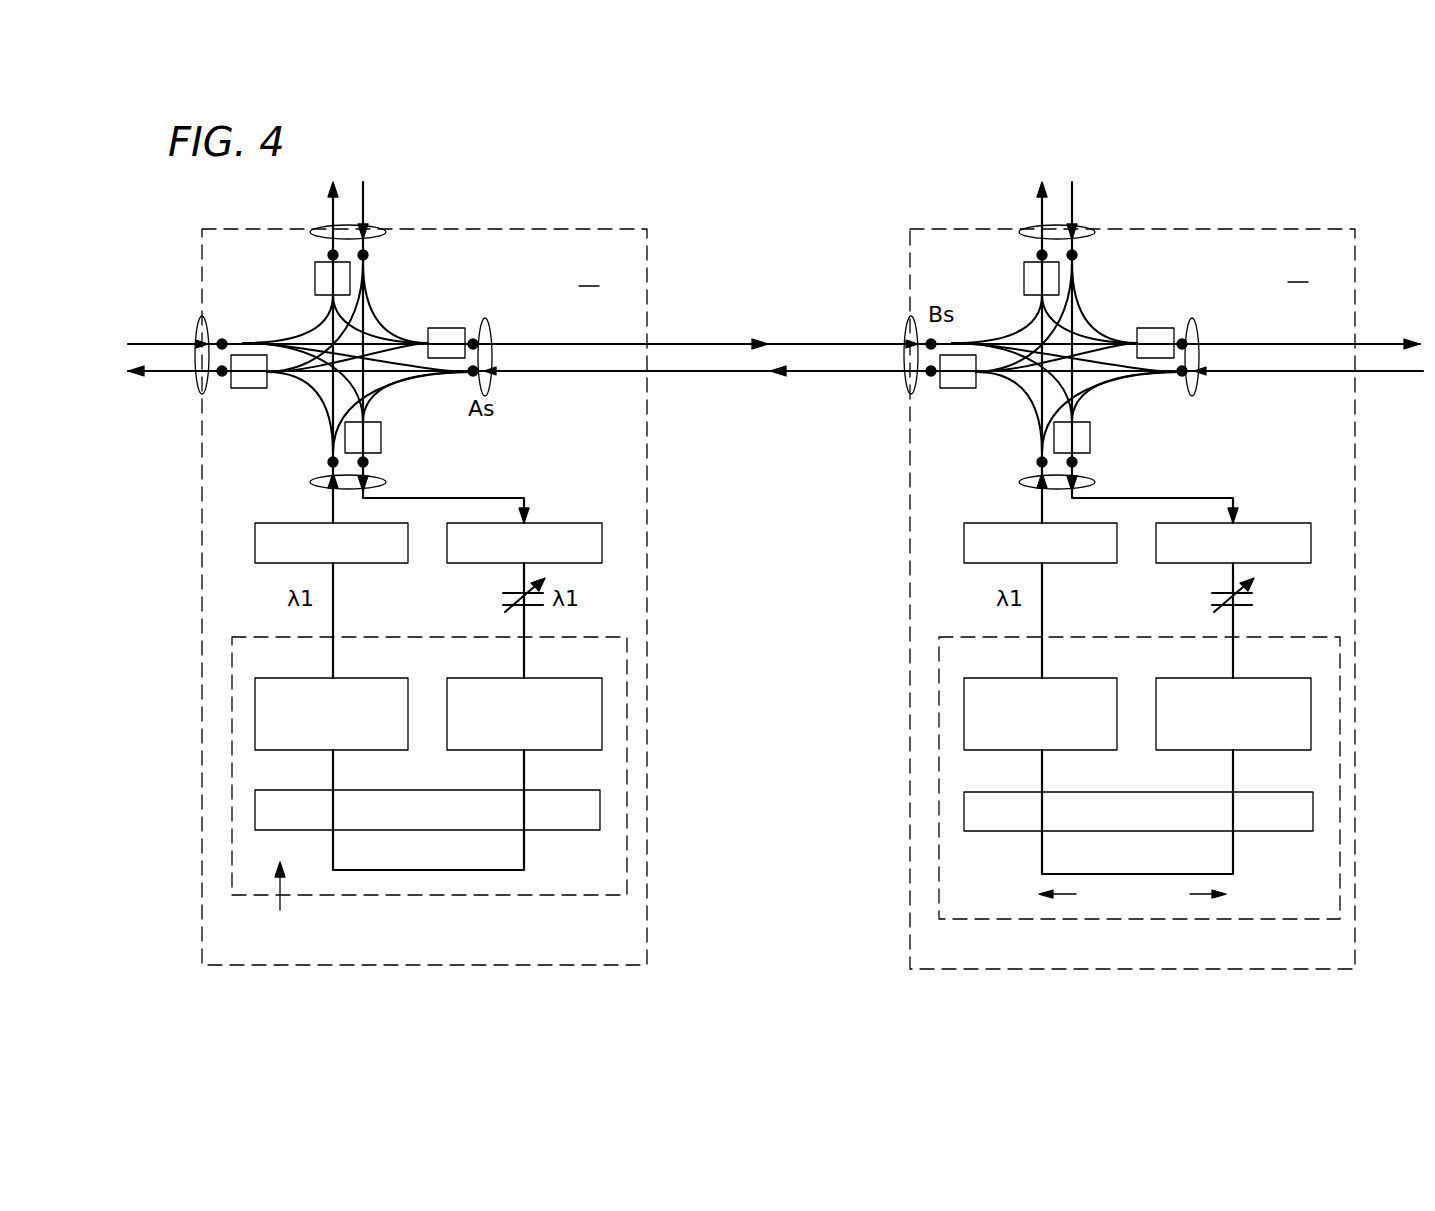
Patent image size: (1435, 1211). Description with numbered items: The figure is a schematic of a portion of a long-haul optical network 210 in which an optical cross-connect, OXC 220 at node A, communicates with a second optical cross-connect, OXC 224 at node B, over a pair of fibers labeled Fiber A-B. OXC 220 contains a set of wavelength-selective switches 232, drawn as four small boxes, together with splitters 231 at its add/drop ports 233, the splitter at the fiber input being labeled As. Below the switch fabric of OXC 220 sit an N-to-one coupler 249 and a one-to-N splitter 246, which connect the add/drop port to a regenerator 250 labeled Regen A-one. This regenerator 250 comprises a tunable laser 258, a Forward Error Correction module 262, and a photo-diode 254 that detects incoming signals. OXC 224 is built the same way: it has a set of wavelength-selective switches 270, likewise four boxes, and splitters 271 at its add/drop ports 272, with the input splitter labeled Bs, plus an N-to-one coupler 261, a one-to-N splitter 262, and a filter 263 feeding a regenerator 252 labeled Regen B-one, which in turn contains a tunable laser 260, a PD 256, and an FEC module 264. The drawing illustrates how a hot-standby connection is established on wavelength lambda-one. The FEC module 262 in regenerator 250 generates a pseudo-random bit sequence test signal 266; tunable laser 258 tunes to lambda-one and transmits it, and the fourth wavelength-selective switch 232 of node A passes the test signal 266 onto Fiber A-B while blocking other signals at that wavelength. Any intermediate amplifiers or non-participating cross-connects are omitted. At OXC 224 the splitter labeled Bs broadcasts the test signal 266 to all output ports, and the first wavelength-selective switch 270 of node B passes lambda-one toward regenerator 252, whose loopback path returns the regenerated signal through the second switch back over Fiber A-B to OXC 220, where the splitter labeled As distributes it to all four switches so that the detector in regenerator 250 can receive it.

The optical network 210 is at (743, 222).
The OXC (node A) 220 is at (573, 228).
The OXC (node B) 224 is at (1282, 229).
The splitters 231 is at (223, 338).
The wavelength-selective switches 232 is at (314, 275).
The add/drop ports 233 is at (373, 229).
The 1:N splitter 246 is at (602, 543).
The N:1 coupler 249 is at (255, 543).
The regenerator 250 is at (418, 900).
The regenerator 252 is at (1131, 925).
The photo-diode 254 is at (602, 712).
The PD 256 is at (1311, 714).
The tunable laser 258 is at (255, 710).
The tunable laser 260 is at (964, 710).
The N:1 coupler 261 is at (964, 543).
The FEC module / 1:N splitter 262 is at (600, 808).
The filter 263 is at (1300, 597).
The FEC module 264 is at (1313, 810).
The test signal 266 is at (250, 928).
The wavelength-selective switches 270 is at (1024, 275).
The splitters 271 is at (928, 342).
The add/drop ports 272 is at (1085, 229).